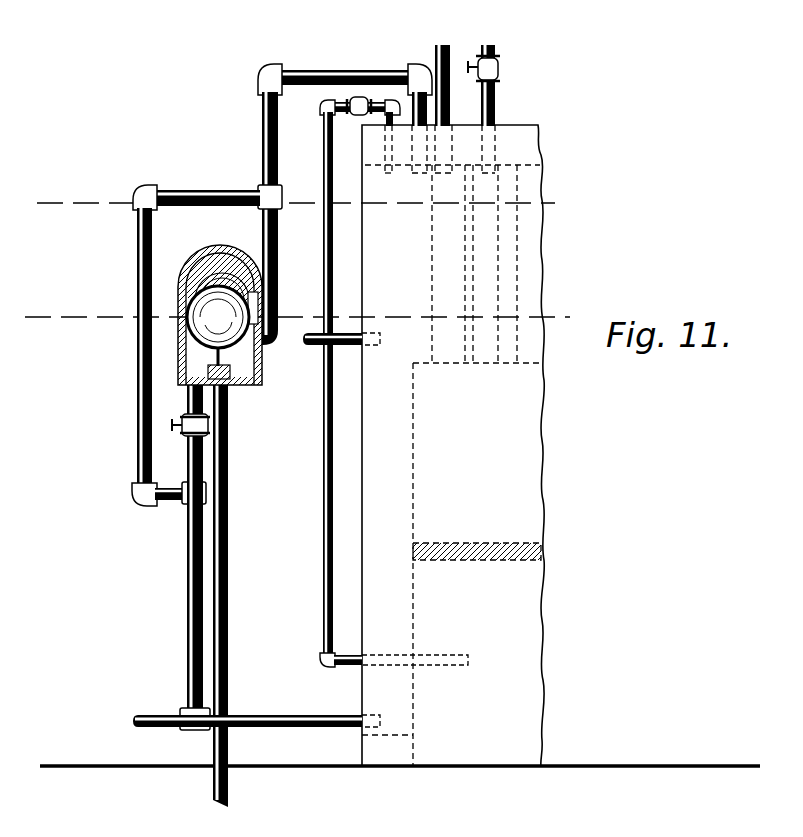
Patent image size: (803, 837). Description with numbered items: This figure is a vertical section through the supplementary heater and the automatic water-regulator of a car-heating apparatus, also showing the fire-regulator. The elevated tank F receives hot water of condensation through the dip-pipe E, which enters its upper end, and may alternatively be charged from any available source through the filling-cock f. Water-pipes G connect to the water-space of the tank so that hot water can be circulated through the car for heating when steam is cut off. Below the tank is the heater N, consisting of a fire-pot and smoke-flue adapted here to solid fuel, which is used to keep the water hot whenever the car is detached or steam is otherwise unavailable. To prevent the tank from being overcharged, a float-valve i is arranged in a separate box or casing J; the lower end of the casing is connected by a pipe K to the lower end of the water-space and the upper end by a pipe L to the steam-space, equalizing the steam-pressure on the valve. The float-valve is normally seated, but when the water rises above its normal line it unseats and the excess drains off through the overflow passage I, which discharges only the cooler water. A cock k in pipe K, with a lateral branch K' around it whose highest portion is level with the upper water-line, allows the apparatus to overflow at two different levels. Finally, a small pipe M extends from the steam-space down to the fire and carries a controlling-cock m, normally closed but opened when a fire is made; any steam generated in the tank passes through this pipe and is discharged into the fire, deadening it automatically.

The tank F is at (447, 372).
The heater N is at (478, 564).
The pipe L is at (345, 193).
The lateral branch K' is at (185, 345).
The pipe K is at (182, 557).
The cock k is at (175, 420).
The overflow port or passage I is at (222, 566).
The box or casing J is at (218, 248).
The float-valve i is at (218, 317).
The controlling-cock m is at (368, 93).
The water-pipes G is at (335, 384).
The pipe M is at (420, 660).
The dip-pipe E is at (442, 72).
The filling-cock f is at (490, 85).